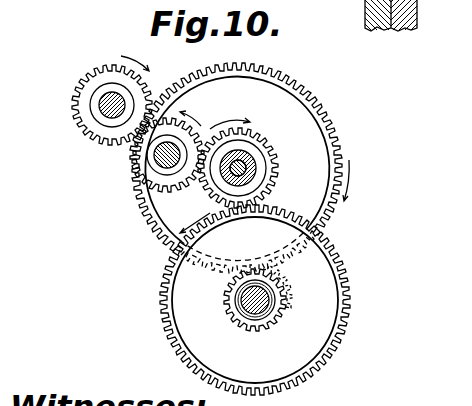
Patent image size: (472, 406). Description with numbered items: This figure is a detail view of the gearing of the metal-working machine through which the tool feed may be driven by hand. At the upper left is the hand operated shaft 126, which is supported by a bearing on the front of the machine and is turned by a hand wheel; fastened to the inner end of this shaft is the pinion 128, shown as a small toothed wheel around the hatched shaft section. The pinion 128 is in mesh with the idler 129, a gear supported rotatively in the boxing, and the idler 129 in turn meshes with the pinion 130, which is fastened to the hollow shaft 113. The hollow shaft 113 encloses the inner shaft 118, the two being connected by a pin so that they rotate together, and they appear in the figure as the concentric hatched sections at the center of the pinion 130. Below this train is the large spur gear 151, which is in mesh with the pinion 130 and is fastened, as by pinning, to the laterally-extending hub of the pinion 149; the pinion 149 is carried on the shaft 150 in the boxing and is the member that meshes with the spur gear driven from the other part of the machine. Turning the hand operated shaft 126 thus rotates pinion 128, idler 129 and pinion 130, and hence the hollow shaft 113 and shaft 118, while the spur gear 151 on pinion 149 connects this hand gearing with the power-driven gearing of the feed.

The hollow shaft 113 is at (253, 183).
The shaft 118 is at (257, 163).
The hand operated shaft 126 is at (105, 112).
The pinion 128 is at (93, 75).
The idler 129 is at (128, 160).
The pinion 130 is at (272, 143).
The pinion 149 is at (280, 320).
The shaft 150 is at (247, 307).
The spur gear 151 is at (327, 263).